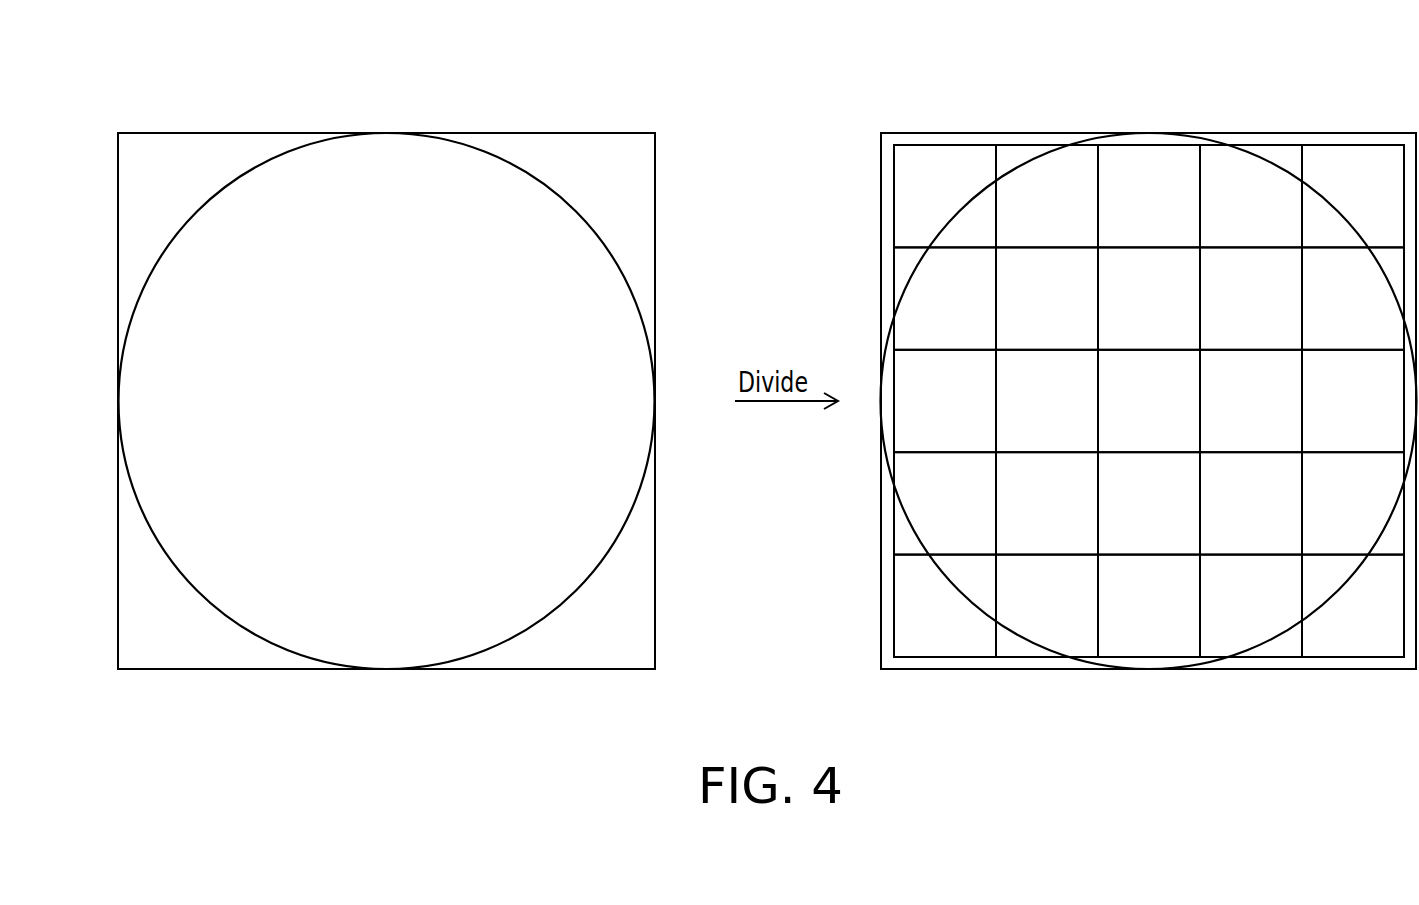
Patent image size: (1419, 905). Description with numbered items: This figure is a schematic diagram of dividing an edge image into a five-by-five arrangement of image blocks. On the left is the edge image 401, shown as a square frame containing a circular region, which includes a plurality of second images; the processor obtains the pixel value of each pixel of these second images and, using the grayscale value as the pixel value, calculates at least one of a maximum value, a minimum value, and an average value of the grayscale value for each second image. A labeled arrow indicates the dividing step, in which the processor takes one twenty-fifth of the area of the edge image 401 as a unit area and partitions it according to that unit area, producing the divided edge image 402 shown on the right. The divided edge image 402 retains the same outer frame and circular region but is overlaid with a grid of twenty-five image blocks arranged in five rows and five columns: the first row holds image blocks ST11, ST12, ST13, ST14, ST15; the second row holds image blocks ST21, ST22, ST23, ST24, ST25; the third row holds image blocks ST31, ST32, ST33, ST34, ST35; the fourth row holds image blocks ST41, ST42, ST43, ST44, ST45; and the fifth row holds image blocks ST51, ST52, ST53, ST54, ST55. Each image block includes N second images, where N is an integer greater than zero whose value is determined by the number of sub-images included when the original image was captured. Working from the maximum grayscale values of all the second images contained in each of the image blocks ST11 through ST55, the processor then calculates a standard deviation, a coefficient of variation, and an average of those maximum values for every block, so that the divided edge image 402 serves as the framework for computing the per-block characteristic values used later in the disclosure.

The edge image 401 is at (581, 133).
The divided edge image 402 is at (1149, 354).
The image block ST11 is at (945, 196).
The image block ST12 is at (1047, 196).
The image block ST13 is at (1149, 196).
The image block ST14 is at (1251, 196).
The image block ST15 is at (1353, 196).
The image block ST21 is at (945, 298).
The image block ST22 is at (1047, 298).
The image block ST23 is at (1149, 298).
The image block ST24 is at (1251, 298).
The image block ST25 is at (1353, 298).
The image block ST31 is at (945, 401).
The image block ST32 is at (1047, 401).
The image block ST33 is at (1149, 401).
The image block ST34 is at (1251, 401).
The image block ST35 is at (1353, 401).
The image block ST41 is at (945, 503).
The image block ST42 is at (1047, 503).
The image block ST43 is at (1149, 503).
The image block ST44 is at (1251, 503).
The image block ST45 is at (1353, 503).
The image block ST51 is at (945, 606).
The image block ST52 is at (1047, 606).
The image block ST53 is at (1149, 606).
The image block ST54 is at (1251, 606).
The image block ST55 is at (1353, 606).